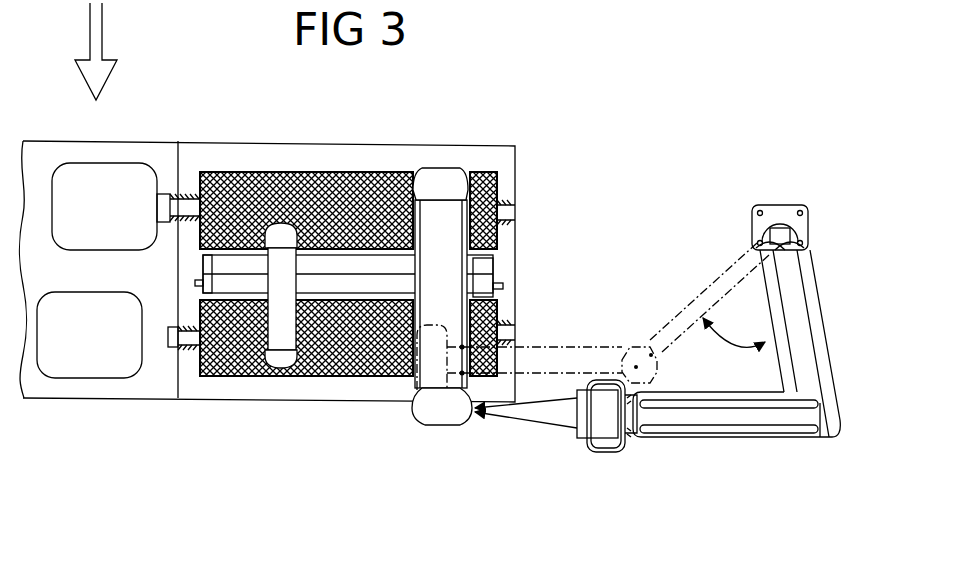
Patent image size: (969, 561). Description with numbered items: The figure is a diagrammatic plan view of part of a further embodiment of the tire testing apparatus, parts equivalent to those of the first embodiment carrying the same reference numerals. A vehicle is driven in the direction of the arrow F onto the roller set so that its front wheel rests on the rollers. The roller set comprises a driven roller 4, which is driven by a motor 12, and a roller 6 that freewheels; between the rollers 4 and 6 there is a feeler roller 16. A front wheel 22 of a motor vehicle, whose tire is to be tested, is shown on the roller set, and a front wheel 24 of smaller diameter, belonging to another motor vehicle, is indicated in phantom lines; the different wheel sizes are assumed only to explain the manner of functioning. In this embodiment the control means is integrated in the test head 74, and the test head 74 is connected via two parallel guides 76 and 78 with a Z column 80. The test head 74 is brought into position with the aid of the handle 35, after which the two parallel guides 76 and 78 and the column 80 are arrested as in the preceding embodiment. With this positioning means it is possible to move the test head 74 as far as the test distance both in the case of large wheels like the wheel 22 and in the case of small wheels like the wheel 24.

The arrow F is at (96, 44).
The motor 12 is at (122, 177).
The roller 4 is at (323, 183).
The roller 6 is at (226, 372).
The feeler roller 16 is at (213, 266).
The front wheel 22 is at (443, 178).
The front wheel 24 is at (287, 362).
The test head 74 is at (428, 373).
The handle 35 is at (628, 450).
The parallel guide 76 is at (738, 433).
The parallel guide 78 is at (810, 299).
The Z column 80 is at (773, 207).